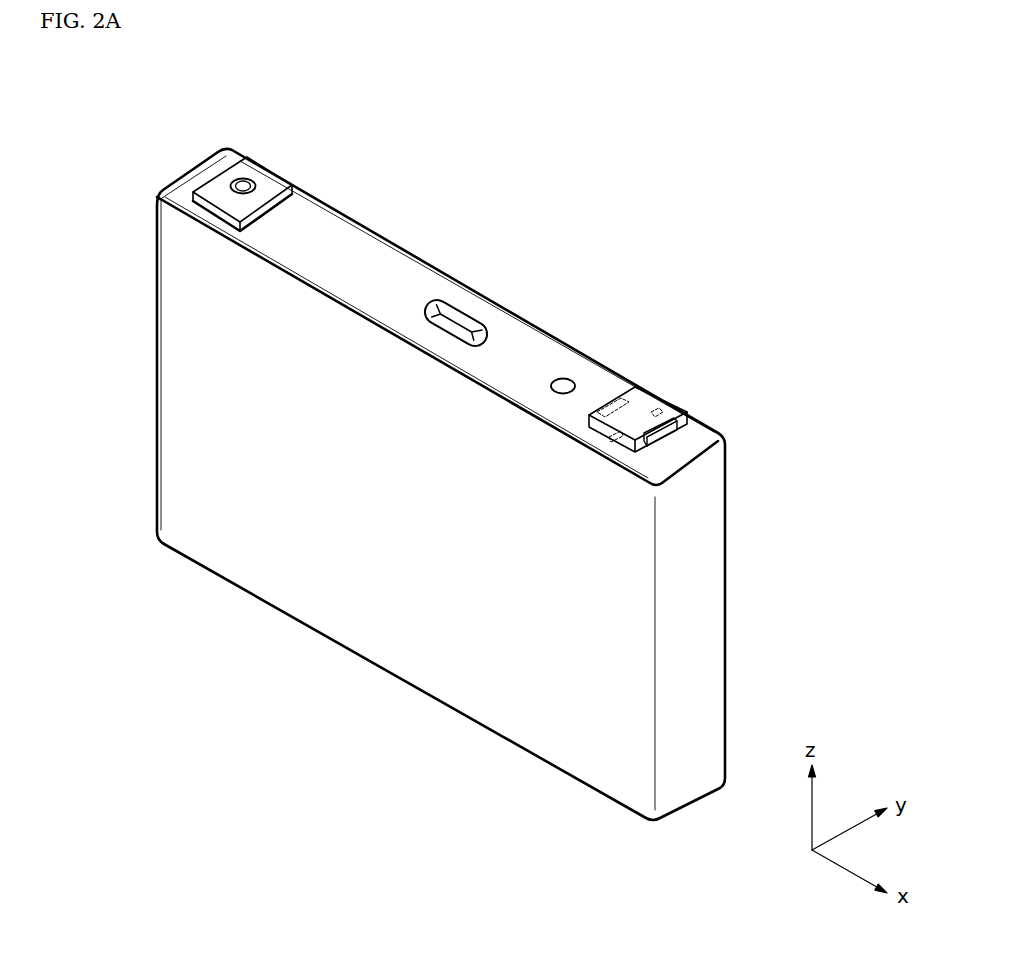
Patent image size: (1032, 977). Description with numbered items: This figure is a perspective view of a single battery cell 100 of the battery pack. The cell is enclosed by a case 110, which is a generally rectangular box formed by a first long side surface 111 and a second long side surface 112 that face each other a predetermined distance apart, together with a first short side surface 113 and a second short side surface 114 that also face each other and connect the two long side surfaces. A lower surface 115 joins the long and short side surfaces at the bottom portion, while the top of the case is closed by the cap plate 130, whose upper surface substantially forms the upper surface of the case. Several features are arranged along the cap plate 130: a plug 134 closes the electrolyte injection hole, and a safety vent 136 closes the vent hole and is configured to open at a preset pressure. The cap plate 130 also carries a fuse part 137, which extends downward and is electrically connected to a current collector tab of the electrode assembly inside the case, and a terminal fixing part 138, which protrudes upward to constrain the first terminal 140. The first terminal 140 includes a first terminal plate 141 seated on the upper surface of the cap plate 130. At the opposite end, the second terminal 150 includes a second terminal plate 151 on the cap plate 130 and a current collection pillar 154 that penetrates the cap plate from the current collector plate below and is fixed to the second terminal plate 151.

The battery cell 100 is at (762, 195).
The case 110 is at (262, 619).
The first long side surface 111 is at (500, 715).
The second long side surface 112 is at (728, 559).
The first short side surface 113 is at (155, 366).
The second short side surface 114 is at (715, 632).
The lower surface 115 is at (400, 686).
The cap plate 130 is at (378, 255).
The plug 134 is at (565, 379).
The safety vent 136 is at (465, 313).
The fuse part 137 is at (662, 410).
The terminal fixing part 138 is at (690, 419).
The first terminal 140 is at (670, 378).
The first terminal plate 141 is at (638, 393).
The second terminal 150 is at (301, 171).
The second terminal plate 151 is at (256, 177).
The current collection pillar 154 is at (238, 178).